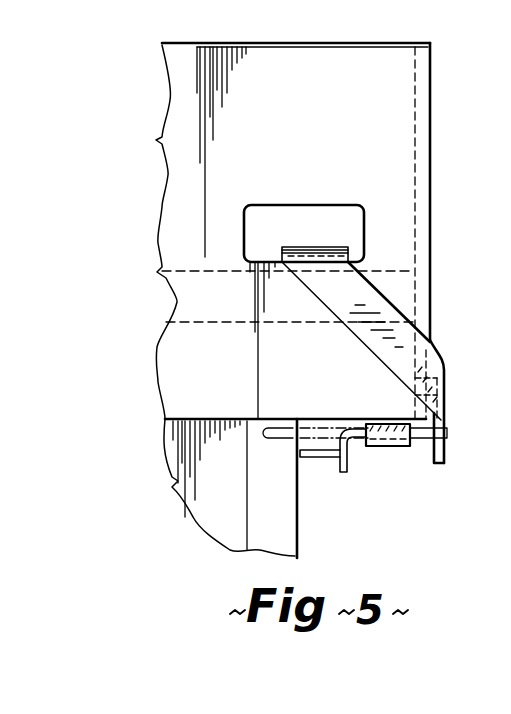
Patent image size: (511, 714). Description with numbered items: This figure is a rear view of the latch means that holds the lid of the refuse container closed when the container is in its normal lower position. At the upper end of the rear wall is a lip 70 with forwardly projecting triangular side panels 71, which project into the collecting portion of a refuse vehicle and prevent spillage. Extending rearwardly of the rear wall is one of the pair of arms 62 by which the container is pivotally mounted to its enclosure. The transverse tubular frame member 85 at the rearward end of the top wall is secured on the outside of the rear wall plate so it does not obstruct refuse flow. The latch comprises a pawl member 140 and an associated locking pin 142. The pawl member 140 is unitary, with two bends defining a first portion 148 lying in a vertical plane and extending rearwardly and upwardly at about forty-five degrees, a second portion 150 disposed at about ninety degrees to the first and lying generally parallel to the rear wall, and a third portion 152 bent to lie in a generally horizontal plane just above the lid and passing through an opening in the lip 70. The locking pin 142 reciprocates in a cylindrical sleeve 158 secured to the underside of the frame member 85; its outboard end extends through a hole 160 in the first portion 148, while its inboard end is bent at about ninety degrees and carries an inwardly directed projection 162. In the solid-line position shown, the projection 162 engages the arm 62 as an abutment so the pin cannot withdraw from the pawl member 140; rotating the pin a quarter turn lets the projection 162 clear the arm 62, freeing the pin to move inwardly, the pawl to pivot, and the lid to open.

The lip 70 is at (165, 100).
The triangular side panels 71 is at (432, 125).
The tubular frame member 85 is at (190, 385).
The arms 62 is at (284, 549).
The pawl member 140 is at (449, 412).
The locking pin 142 is at (333, 472).
The first portion 148 is at (447, 364).
The second portion 150 is at (352, 282).
The third portion 152 is at (298, 246).
The cylindrical sleeve 158 is at (386, 448).
The hole 160 is at (448, 455).
The projection 162 is at (320, 452).